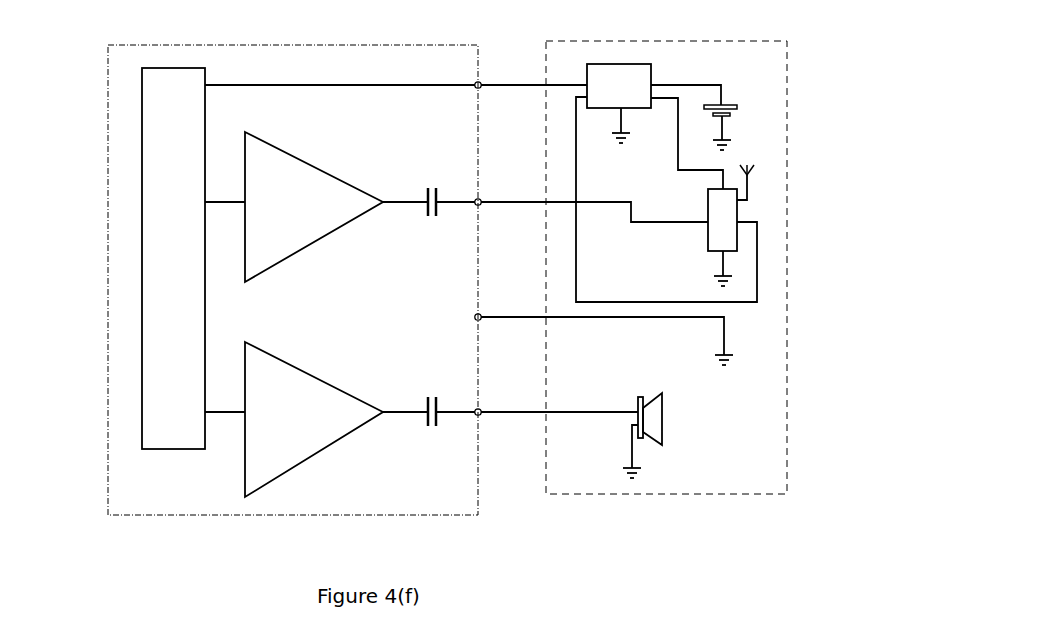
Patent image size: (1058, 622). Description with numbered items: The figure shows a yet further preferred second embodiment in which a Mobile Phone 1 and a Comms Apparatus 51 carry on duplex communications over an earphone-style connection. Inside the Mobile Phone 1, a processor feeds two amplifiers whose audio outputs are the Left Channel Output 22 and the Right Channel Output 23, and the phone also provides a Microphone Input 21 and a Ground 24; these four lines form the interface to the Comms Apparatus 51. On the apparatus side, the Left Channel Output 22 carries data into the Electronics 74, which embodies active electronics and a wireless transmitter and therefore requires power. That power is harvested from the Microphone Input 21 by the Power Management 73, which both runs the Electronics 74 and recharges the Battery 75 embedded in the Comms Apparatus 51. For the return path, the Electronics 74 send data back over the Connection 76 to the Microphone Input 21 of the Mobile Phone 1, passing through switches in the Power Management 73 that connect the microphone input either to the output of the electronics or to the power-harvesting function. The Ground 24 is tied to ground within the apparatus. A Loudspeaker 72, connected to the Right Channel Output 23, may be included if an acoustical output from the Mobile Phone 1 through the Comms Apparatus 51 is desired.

The mobile phone 1 is at (80, 407).
The microphone input 21 is at (480, 82).
The left channel output 22 is at (480, 206).
The right channel output 23 is at (480, 409).
The ground 24 is at (480, 321).
The comms apparatus 51 is at (632, 515).
The loudspeaker 72 is at (655, 420).
The power management 73 is at (615, 75).
The electronics 74 is at (733, 217).
The battery 75 is at (737, 107).
The connection 76 is at (758, 258).